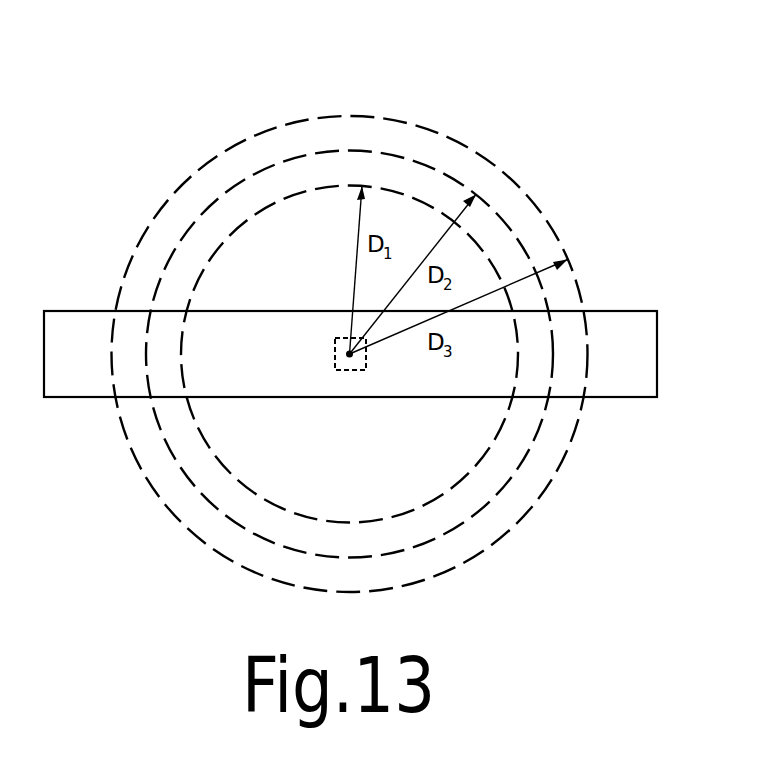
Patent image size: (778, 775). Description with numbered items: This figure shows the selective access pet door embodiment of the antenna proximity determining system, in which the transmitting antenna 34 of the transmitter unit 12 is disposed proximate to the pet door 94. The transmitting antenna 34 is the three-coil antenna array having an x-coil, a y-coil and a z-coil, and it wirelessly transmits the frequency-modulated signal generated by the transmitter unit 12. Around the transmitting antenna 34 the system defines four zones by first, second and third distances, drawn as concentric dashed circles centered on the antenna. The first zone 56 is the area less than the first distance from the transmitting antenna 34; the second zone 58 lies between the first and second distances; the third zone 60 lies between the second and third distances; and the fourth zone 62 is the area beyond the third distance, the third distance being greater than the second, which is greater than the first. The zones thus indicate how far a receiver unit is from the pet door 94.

The transmitter unit 12 is at (352, 368).
The transmitting antenna 34 is at (335, 360).
The first zone 56 is at (298, 222).
The second zone 58 is at (337, 167).
The third zone 60 is at (422, 142).
The fourth zone 62 is at (533, 173).
The pet door 94 is at (635, 333).